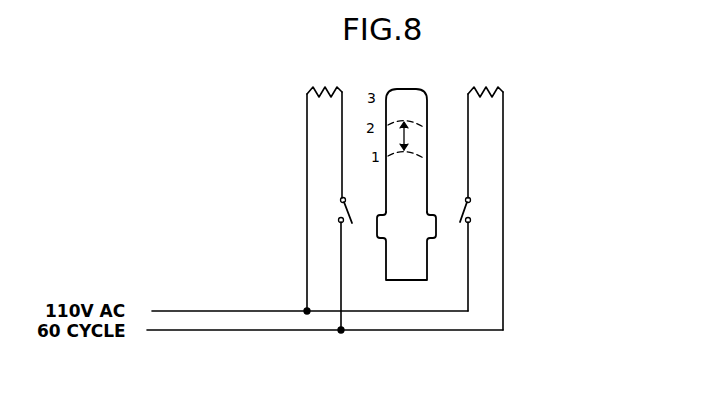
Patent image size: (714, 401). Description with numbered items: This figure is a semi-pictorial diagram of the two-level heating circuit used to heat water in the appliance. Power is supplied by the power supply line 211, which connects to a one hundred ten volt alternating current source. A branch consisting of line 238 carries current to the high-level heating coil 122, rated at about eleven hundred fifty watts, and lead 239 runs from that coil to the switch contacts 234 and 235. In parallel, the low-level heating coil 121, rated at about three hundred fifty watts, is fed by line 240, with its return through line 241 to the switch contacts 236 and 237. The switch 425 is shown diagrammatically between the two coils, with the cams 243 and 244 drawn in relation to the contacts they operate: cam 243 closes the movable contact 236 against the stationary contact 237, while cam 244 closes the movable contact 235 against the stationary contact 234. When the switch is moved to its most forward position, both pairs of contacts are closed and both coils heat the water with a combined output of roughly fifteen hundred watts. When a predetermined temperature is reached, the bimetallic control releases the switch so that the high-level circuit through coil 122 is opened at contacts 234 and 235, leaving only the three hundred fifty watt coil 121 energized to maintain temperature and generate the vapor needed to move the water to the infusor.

The heating coil 121 is at (311, 90).
The heating coil 122 is at (498, 90).
The switch 425 is at (406, 170).
The return line 241 is at (341, 129).
The line 240 is at (306, 193).
The lead 239 is at (468, 148).
The line 238 is at (503, 190).
The movable contact 236 is at (347, 213).
The stationary contact 234 is at (462, 215).
The stationary contact 237 is at (340, 240).
The movable contact 235 is at (468, 238).
The cam 243 is at (377, 237).
The cam 244 is at (436, 240).
The power supply conduit 211 is at (282, 330).